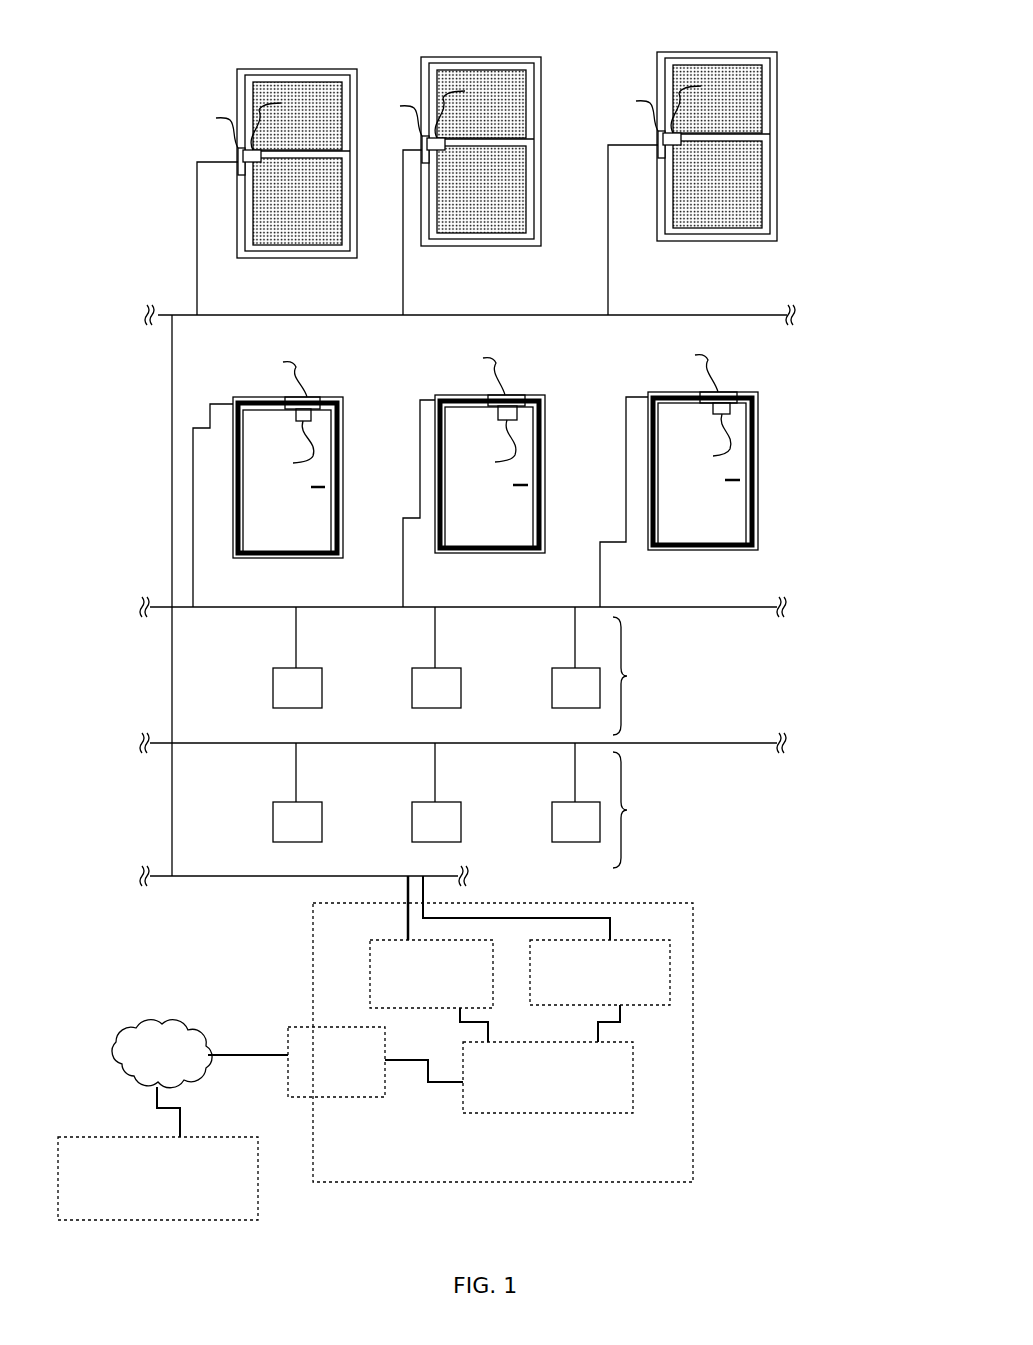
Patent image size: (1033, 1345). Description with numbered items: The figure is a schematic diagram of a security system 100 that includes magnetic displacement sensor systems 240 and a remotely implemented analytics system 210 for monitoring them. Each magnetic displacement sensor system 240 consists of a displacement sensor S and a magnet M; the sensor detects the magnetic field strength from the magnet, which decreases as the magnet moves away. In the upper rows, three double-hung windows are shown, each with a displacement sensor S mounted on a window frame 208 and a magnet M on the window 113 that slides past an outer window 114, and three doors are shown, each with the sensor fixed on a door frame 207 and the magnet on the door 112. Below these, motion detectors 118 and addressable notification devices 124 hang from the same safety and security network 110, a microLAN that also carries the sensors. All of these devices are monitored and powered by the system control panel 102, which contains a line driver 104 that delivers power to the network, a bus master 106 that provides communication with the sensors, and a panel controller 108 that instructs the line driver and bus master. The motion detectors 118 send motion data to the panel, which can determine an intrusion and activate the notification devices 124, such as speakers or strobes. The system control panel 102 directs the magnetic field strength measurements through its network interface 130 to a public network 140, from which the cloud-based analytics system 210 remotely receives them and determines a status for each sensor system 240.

The security system 100 is at (116, 66).
The system control panel 102 is at (313, 975).
The line driver 104 is at (431, 974).
The bus master 106 is at (600, 972).
The panel controller 108 is at (548, 1077).
The safety and security network 110 is at (172, 805).
The door 112 is at (280, 532).
The window 113 is at (297, 232).
The outer window 114 is at (323, 90).
The motion detector 118 is at (296, 708).
The addressable notification device 124 is at (296, 842).
The network interface 130 is at (336, 1062).
The public network 140 is at (156, 1022).
The door frame 207 is at (333, 437).
The window frame 208 is at (278, 70).
The analytics system 210 is at (158, 1178).
The magnetic displacement sensor system 240 is at (261, 176).